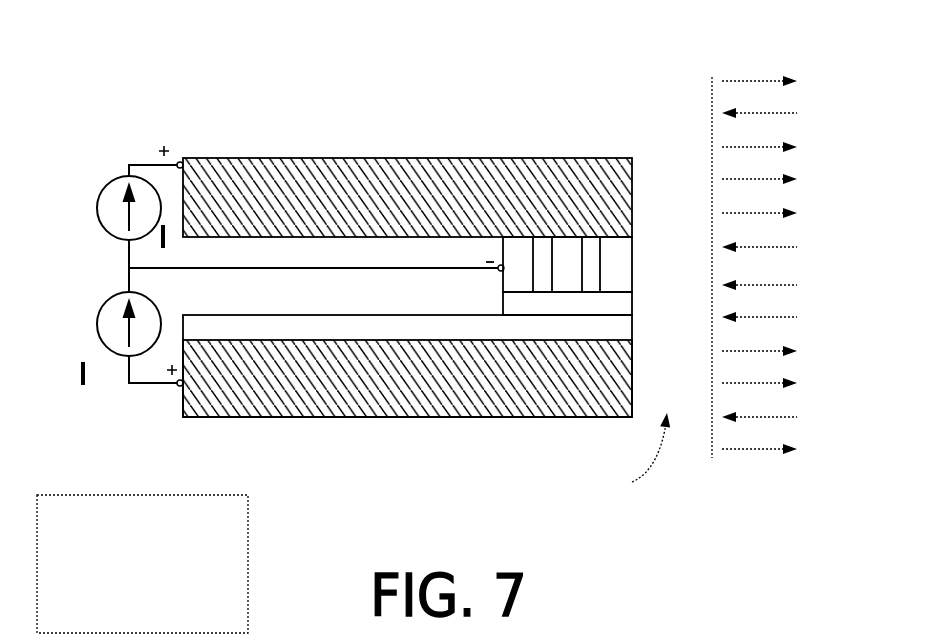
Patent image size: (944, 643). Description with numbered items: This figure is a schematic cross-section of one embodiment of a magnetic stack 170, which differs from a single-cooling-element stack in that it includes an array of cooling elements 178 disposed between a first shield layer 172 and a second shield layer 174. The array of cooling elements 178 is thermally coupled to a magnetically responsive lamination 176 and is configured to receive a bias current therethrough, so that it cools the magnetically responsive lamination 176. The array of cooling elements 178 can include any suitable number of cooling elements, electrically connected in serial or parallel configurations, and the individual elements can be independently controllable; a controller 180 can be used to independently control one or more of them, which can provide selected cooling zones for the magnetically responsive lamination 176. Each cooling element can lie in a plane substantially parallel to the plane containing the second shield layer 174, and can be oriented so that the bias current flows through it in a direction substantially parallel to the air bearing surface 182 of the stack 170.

The magnetic stack 170 is at (413, 85).
The first shield layer 172 is at (563, 417).
The second shield layer 174 is at (527, 157).
The magnetically responsive lamination 176 is at (502, 303).
The array of cooling elements 178 is at (477, 283).
The controller 180 is at (118, 495).
The air bearing surface 182 is at (628, 458).